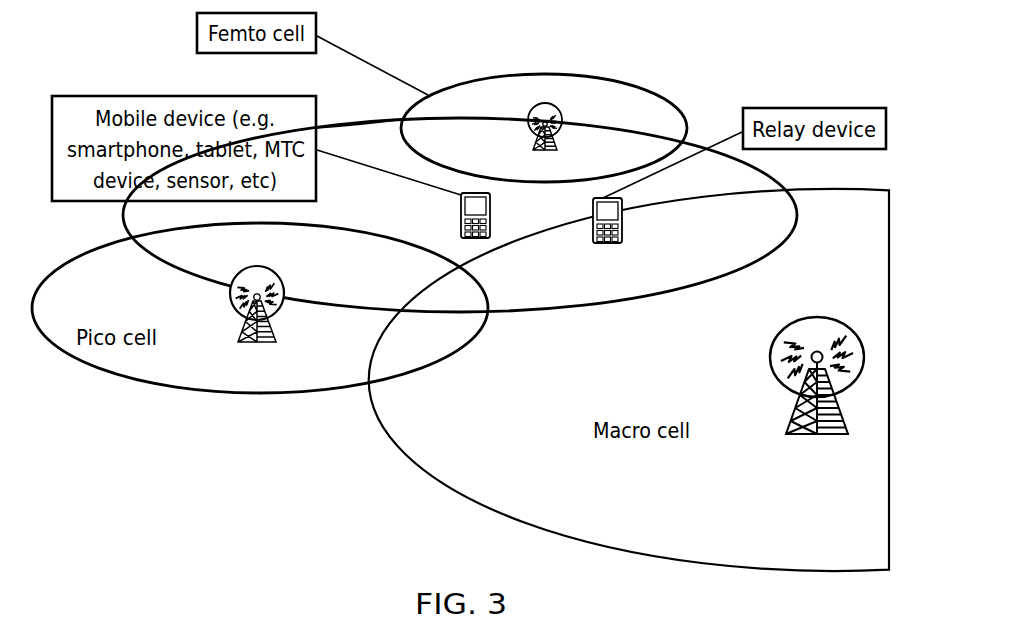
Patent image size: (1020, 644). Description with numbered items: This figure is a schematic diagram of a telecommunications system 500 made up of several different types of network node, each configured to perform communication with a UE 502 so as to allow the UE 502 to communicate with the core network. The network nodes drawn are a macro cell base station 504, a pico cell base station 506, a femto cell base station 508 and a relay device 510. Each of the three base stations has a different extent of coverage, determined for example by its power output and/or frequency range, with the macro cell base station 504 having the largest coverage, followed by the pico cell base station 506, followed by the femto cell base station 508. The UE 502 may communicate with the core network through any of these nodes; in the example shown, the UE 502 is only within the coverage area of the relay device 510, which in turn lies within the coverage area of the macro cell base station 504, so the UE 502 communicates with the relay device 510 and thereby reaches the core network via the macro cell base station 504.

The telecommunications system 500 is at (544, 76).
The UE 502 is at (477, 239).
The macro cell base station 504 is at (823, 436).
The pico cell base station 506 is at (251, 343).
The femto cell base station 508 is at (542, 103).
The relay device 510 is at (608, 244).